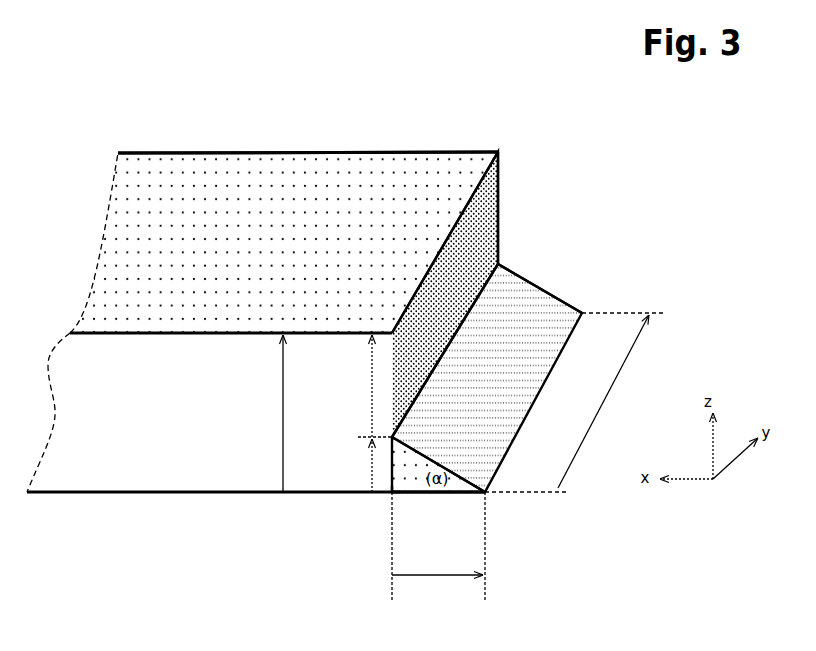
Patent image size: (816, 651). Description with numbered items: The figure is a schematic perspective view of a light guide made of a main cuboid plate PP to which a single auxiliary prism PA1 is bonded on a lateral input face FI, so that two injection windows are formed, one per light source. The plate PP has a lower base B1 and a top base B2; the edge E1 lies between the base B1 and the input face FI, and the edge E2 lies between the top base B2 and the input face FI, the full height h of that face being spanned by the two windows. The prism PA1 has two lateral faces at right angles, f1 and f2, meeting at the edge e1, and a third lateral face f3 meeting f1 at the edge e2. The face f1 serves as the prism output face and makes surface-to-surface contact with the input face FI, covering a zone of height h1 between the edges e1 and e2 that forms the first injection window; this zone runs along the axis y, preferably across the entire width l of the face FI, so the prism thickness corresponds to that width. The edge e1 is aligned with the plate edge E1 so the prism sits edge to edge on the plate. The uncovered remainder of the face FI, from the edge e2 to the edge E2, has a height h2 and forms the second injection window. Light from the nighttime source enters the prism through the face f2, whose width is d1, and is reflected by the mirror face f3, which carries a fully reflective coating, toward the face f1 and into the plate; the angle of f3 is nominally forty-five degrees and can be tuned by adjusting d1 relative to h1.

The main plate PP is at (253, 137).
The base of the plate B1 is at (228, 500).
The top base of the plate B2 is at (284, 242).
The edge of the plate between the top base and the input face E2 is at (498, 152).
The edge of the auxiliary prism between the first and third lateral faces e2 is at (431, 372).
The edge of the plate between the base and the input face E1 is at (392, 494).
The edge of the auxiliary prism between the two lateral faces at right angles e1 is at (396, 489).
The input face FI is at (488, 254).
The auxiliary prism PA1 is at (545, 291).
The first lateral face of the auxiliary prism f1 is at (438, 464).
The second lateral face of the auxiliary prism f2 is at (453, 530).
The third lateral face of the auxiliary prism f3 is at (487, 378).
The plate thickness h is at (273, 413).
The height of the first injection window h1 is at (367, 464).
The height of the second injection window h2 is at (357, 386).
The width of the second lateral face d1 is at (438, 548).
The width of the input face l is at (603, 401).